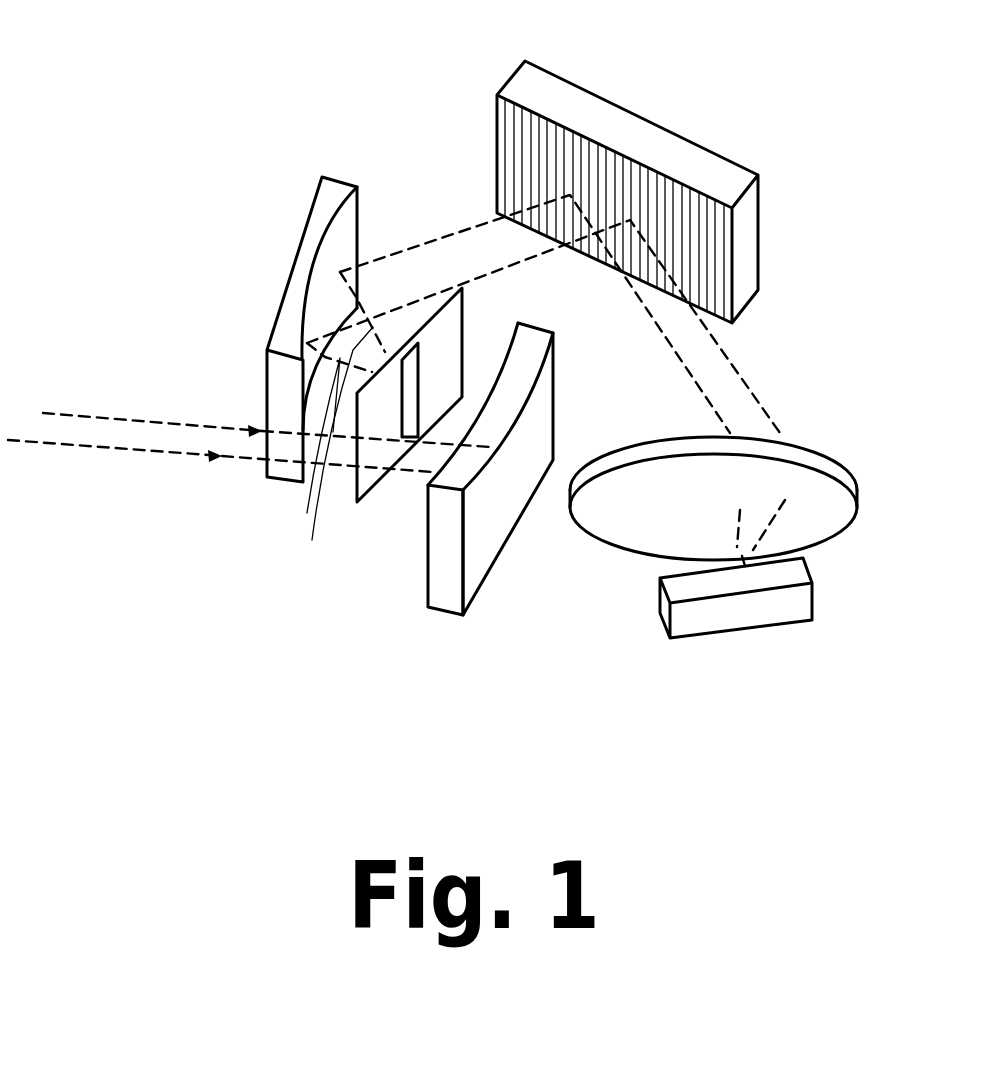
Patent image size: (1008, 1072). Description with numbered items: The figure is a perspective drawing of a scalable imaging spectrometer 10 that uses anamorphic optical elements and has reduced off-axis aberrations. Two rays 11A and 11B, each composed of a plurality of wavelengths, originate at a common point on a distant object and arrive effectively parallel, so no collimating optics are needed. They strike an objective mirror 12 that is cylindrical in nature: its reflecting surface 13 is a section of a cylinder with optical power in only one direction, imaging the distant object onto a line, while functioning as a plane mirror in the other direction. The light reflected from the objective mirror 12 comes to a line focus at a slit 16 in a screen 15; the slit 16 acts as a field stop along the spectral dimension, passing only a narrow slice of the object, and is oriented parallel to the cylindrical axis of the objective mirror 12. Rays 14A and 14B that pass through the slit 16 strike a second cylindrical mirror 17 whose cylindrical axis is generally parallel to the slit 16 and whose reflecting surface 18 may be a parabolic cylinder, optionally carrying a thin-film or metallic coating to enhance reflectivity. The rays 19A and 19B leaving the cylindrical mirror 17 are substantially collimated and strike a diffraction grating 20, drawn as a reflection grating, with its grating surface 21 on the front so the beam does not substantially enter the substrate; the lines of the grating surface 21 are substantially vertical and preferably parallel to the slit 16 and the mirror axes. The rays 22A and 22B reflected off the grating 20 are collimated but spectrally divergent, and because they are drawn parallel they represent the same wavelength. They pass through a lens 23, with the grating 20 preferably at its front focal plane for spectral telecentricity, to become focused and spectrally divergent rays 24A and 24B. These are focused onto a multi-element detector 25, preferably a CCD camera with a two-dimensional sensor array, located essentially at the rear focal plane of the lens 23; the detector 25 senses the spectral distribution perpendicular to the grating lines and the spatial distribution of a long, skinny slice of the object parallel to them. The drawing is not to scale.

The scalable imaging spectrometer 10 is at (185, 177).
The ray 11A is at (115, 448).
The ray 11B is at (150, 420).
The objective mirror 12 is at (480, 535).
The reflecting surface 13 is at (427, 549).
The ray 14A is at (312, 537).
The ray 14B is at (312, 470).
The screen 15 is at (365, 487).
The slit 16 is at (422, 367).
The second cylindrical mirror 17 is at (328, 202).
The reflecting surface 18 is at (347, 218).
The ray 19A is at (408, 245).
The ray 19B is at (445, 290).
The diffraction grating 20 is at (543, 87).
The grating surface 21 is at (500, 118).
The ray 22A is at (700, 390).
The ray 22B is at (768, 408).
The lens 23 is at (812, 453).
The ray 24A is at (743, 527).
The ray 24B is at (777, 517).
The multi-element detector 25 is at (732, 613).